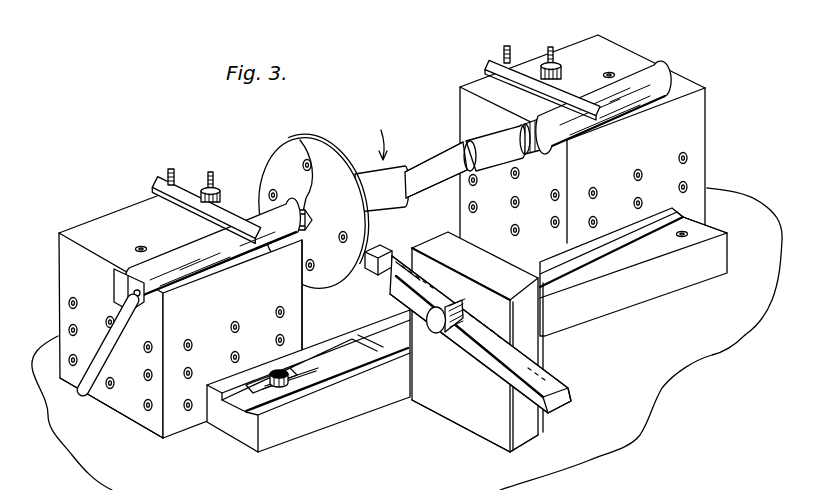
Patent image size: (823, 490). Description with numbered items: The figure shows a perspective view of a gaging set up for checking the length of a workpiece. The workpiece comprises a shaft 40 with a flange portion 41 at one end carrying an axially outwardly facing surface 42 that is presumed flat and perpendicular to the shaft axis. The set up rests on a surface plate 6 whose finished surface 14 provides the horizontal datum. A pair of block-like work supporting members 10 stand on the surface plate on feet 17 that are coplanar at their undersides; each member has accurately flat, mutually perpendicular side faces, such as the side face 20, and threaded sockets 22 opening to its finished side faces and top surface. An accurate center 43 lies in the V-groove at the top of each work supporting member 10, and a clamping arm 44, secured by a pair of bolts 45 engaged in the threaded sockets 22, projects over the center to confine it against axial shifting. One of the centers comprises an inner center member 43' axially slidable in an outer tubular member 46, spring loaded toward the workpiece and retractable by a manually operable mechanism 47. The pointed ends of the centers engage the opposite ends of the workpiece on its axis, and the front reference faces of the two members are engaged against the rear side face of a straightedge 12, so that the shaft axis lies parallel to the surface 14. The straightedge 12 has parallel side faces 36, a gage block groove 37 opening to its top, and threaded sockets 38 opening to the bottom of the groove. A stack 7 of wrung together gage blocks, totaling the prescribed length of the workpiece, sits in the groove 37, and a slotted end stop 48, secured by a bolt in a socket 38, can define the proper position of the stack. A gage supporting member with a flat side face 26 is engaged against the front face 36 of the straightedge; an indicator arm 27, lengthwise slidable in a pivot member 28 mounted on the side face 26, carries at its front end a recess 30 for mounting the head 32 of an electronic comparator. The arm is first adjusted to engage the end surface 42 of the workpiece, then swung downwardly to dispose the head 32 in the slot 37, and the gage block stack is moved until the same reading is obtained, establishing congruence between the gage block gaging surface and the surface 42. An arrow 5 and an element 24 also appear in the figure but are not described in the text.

The view direction arrow 5 is at (376, 137).
The surface plate 6 is at (680, 357).
The stack of wrung together gage blocks 7 is at (557, 278).
The work supporting member 10 is at (86, 226).
The straightedge 12 is at (334, 414).
The finished surface 14 is at (735, 310).
The feet 17 is at (63, 386).
The side face 20 is at (304, 335).
The threaded sockets 22 is at (140, 245).
The base plate 24 is at (405, 405).
The side face 26 is at (485, 415).
The indicator arm 27 is at (551, 383).
The pivot member 28 is at (436, 322).
The recess 30 is at (399, 263).
The head 32 is at (374, 272).
The side faces 36 is at (660, 287).
The groove 37 is at (685, 233).
The threaded sockets 38 is at (681, 238).
The shaft 40 is at (437, 128).
The flange portion 41 is at (284, 150).
The axially outwardly facing surface 42 is at (300, 140).
The center 43 is at (269, 187).
The inner center member 43' is at (435, 139).
The clamping arm 44 is at (156, 182).
The bolts 45 is at (210, 172).
The outer tubular member 46 is at (187, 248).
The manually operable mechanism 47 is at (98, 392).
The slotted end stop 48 is at (291, 390).